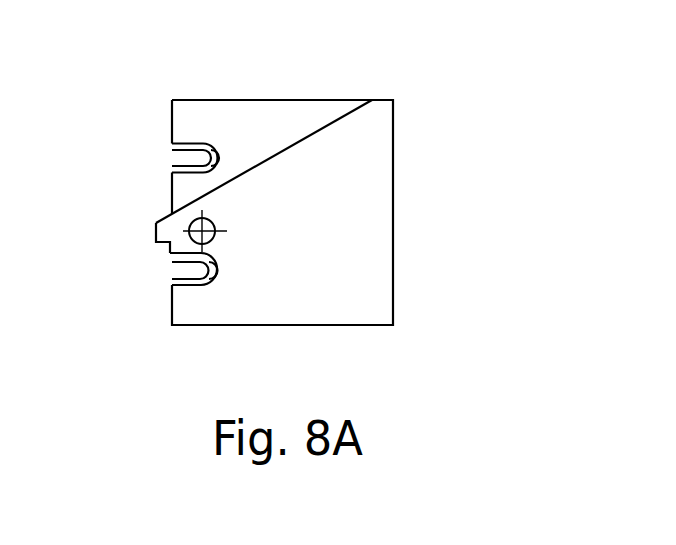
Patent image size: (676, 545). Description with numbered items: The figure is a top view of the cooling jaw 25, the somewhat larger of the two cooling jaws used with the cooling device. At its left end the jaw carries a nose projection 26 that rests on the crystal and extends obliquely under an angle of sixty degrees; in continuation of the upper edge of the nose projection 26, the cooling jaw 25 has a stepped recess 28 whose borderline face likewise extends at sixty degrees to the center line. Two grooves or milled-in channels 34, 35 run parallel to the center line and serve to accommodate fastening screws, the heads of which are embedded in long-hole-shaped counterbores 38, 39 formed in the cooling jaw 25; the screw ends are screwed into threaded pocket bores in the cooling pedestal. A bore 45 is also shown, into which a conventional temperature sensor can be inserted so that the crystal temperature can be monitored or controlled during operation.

The cooling jaw 25 is at (398, 213).
The nose projection 26 is at (160, 234).
The stepped recess 28 is at (291, 145).
The groove 34 is at (201, 156).
The groove 35 is at (193, 269).
The long-hole-shaped counterbore 38 is at (217, 157).
The long-hole-shaped counterbore 39 is at (211, 284).
The bore 45 is at (214, 234).